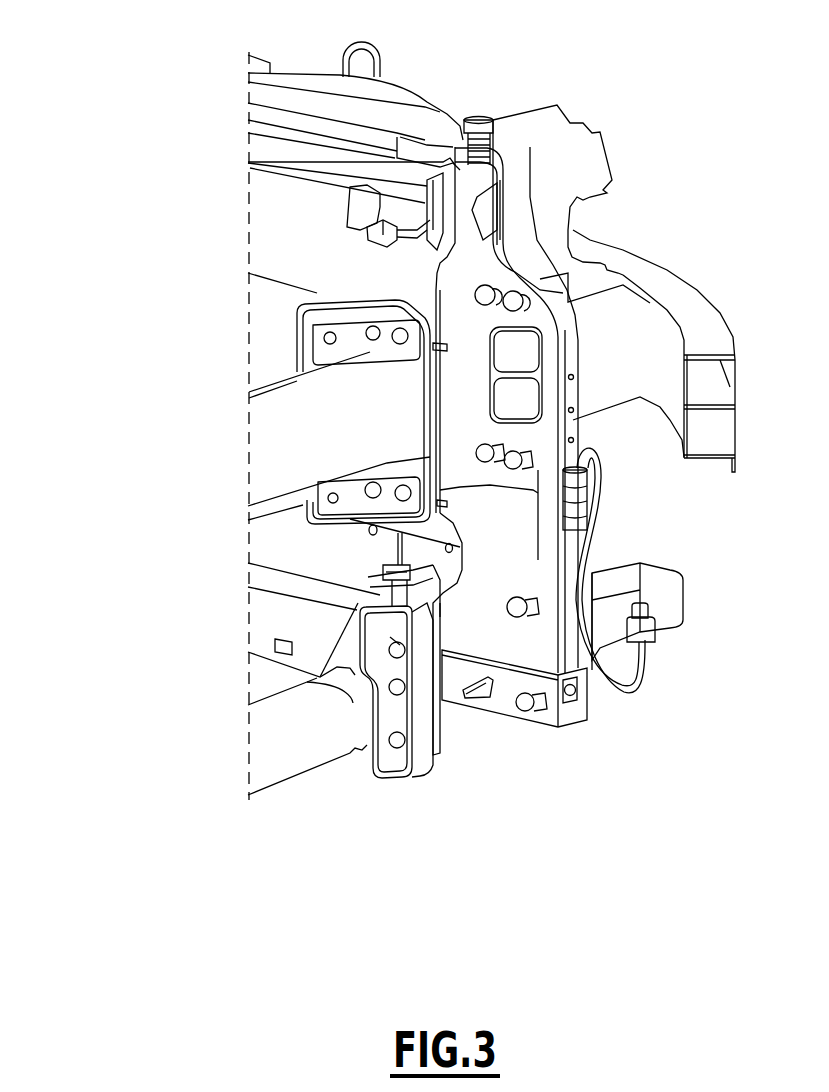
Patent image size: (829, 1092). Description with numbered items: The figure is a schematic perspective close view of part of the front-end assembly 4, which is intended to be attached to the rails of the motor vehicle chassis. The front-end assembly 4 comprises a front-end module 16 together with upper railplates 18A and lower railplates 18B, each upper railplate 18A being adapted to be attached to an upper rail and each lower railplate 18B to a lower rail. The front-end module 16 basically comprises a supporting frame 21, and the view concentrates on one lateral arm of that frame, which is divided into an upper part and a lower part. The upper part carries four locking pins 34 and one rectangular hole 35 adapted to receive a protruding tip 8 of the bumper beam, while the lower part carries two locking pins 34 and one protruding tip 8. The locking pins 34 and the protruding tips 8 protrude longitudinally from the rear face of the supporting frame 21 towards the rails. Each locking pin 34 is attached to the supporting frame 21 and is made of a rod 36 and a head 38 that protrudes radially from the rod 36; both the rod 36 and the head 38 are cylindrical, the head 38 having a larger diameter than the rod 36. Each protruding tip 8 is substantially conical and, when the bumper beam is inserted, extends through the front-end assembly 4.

The front-end assembly 4 is at (97, 74).
The front-end module 16 is at (236, 89).
The supporting frame 21 is at (520, 173).
The upper railplate 18A is at (290, 323).
The lower railplate 18B is at (434, 773).
The rectangular hole 35 is at (507, 357).
The locking pin 34 is at (497, 313).
The head 38 is at (510, 597).
The rod 36 is at (537, 600).
The protruding tip 8 is at (480, 692).